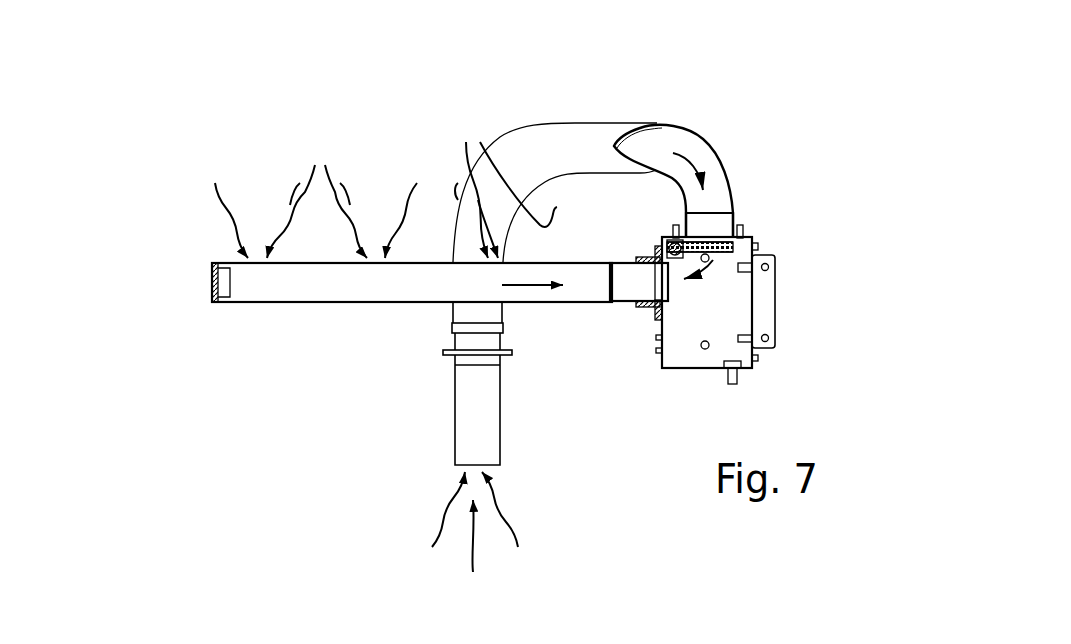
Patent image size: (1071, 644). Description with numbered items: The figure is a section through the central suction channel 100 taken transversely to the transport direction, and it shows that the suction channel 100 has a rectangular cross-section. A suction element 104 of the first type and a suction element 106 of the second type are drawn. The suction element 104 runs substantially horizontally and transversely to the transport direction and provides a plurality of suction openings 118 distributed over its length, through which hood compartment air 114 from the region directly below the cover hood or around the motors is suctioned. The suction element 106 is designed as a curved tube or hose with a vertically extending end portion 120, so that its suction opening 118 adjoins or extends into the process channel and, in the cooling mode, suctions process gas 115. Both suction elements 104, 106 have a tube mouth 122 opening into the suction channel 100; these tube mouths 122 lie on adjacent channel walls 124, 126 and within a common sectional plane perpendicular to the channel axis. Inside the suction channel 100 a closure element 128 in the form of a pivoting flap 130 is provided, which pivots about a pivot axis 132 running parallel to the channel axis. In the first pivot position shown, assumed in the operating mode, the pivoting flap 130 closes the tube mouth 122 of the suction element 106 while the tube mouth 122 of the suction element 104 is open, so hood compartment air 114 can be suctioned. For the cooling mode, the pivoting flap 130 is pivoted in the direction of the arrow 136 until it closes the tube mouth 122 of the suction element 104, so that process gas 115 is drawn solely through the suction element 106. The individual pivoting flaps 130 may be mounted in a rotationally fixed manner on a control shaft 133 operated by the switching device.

The suction channel 100 is at (775, 256).
The suction element of the first type 104 is at (321, 277).
The suction element of the second type 106 is at (570, 150).
The hood compartment air 114 is at (607, 234).
The process gas 115 is at (468, 550).
The suction opening 118 is at (257, 263).
The end portion 120 is at (490, 405).
The tube mouth 122 is at (662, 288).
The channel wall 124 is at (660, 313).
The channel wall 126 is at (725, 240).
The closure element 128 is at (792, 282).
The pivoting flap 130 is at (713, 256).
The pivot axis 132 is at (772, 194).
The control shaft 133 is at (711, 238).
The arrow 136 is at (722, 256).